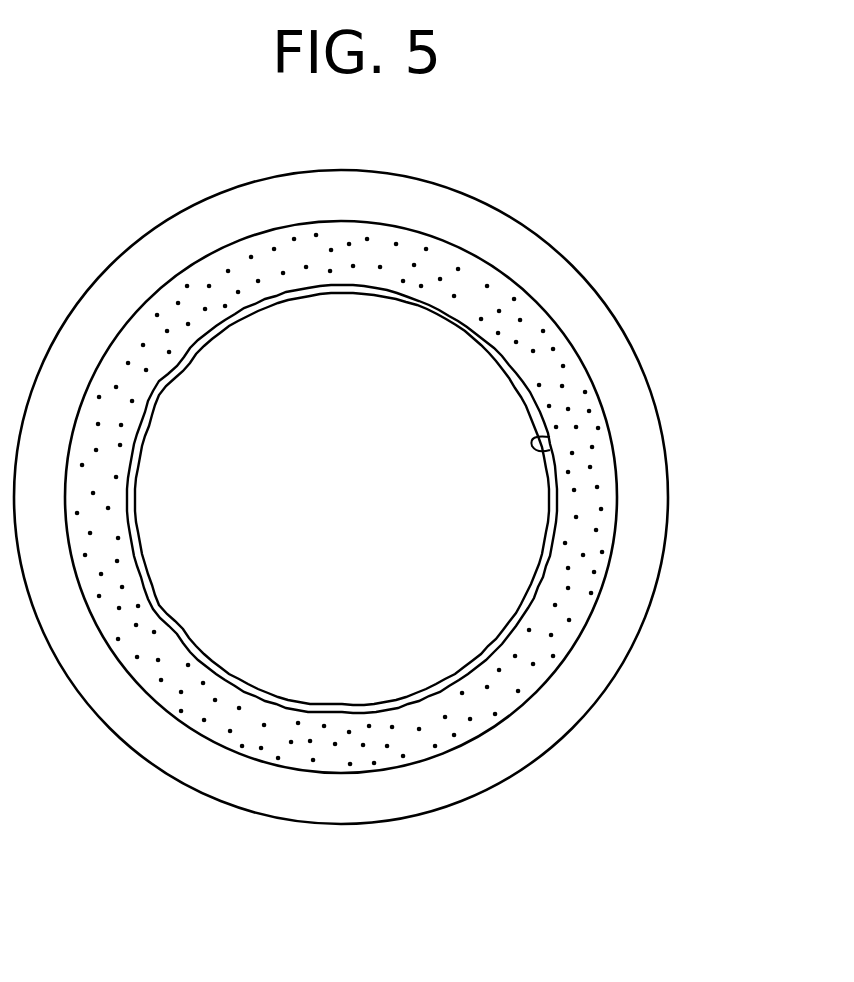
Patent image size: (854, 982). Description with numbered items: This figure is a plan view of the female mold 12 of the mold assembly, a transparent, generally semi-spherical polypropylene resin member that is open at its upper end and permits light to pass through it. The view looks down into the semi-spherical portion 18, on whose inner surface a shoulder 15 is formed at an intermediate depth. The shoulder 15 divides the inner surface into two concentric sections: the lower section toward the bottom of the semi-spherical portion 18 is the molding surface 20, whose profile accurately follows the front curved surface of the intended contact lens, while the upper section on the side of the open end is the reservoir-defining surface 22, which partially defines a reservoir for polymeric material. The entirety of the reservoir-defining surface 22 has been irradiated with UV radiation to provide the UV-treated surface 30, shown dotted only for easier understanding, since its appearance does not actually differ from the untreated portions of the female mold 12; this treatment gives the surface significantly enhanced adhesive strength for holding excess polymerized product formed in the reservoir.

The female mold 12 is at (512, 200).
The shoulder 15 is at (533, 450).
The semi-spherical portion 18 is at (405, 479).
The molding surface 20 is at (447, 380).
The reservoir-defining surface 22 is at (400, 499).
The UV-treated surface 30 is at (598, 538).